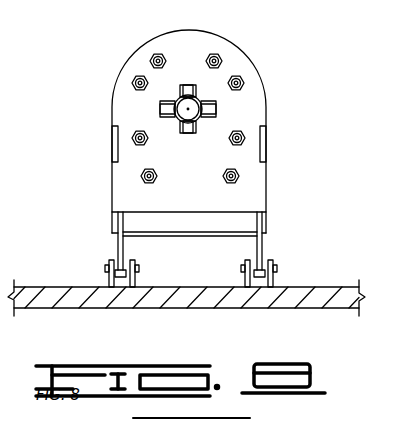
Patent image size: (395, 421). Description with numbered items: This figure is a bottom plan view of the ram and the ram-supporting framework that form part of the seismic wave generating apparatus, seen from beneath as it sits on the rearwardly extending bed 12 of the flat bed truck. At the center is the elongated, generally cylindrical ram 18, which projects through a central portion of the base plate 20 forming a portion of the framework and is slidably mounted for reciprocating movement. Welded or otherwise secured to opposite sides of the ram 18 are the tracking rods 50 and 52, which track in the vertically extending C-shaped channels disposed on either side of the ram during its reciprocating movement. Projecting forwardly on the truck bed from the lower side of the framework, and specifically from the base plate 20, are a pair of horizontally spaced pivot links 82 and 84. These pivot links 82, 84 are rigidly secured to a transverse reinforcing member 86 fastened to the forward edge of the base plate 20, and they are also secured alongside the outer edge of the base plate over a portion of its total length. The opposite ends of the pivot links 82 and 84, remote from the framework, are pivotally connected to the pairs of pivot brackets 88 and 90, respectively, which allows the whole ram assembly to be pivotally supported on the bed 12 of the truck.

The bed 12 is at (175, 310).
The ram 18 is at (188, 104).
The base plate 20 is at (200, 169).
The tracking rod 50 is at (162, 109).
The tracking rod 52 is at (214, 109).
The pivot link 82 is at (118, 233).
The pivot link 84 is at (260, 239).
The transverse reinforcing member 86 is at (180, 224).
The pivot brackets 88 is at (109, 274).
The pivot brackets 90 is at (275, 275).